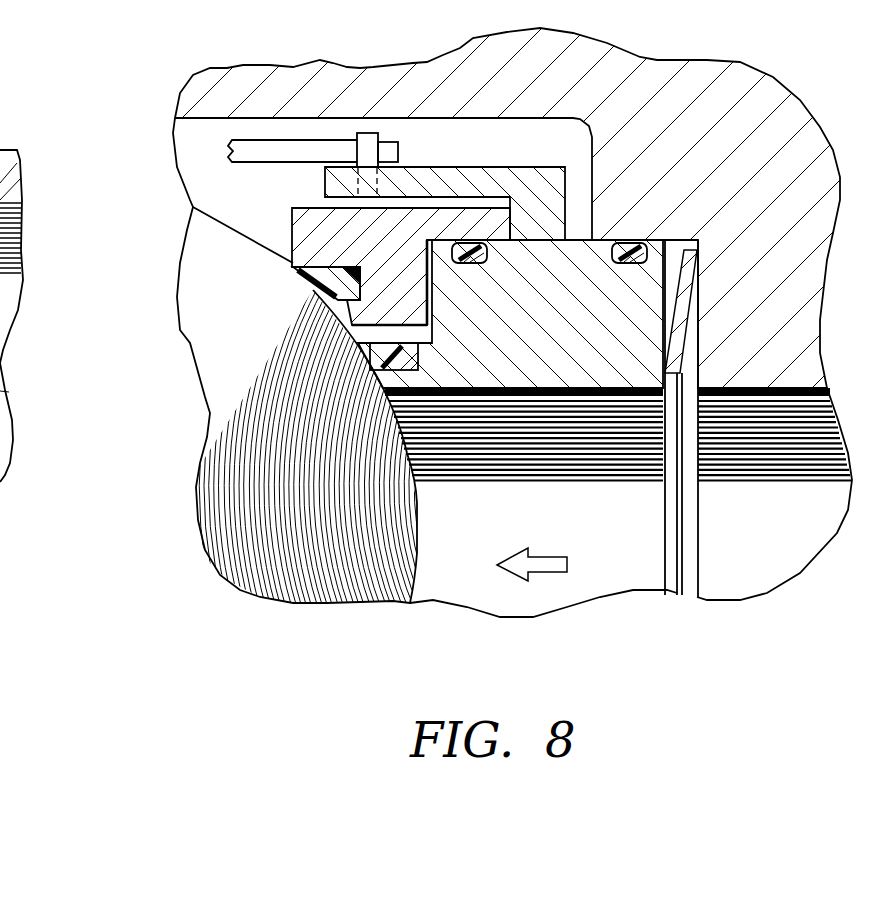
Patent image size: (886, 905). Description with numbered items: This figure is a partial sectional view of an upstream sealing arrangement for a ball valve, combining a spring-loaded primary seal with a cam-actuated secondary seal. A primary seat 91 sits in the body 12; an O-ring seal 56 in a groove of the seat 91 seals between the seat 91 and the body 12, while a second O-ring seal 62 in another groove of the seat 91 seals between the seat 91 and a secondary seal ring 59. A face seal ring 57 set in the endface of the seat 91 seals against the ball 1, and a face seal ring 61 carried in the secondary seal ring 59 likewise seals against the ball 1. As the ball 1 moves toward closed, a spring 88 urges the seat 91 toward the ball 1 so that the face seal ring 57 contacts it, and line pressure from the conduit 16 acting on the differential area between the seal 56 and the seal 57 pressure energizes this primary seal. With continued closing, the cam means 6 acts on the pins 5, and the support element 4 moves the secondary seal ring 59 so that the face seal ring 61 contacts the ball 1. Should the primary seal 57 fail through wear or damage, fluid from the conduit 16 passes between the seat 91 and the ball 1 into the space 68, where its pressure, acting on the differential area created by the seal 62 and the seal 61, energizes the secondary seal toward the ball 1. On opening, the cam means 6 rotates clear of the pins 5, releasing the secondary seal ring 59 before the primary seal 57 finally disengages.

The ball 1 is at (223, 404).
The support element 4 is at (443, 167).
The pins 5 is at (368, 133).
The cam means 6 is at (287, 147).
The body 12 is at (670, 75).
The conduit 16 is at (773, 385).
The O-ring seal 56 is at (628, 242).
The face seal ring 57 is at (380, 360).
The secondary seal ring 59 is at (292, 220).
The face seal ring 61 is at (340, 284).
The O-ring seal 62 is at (472, 242).
The space 68 is at (433, 297).
The spring 88 is at (683, 308).
The seat 91 is at (570, 373).